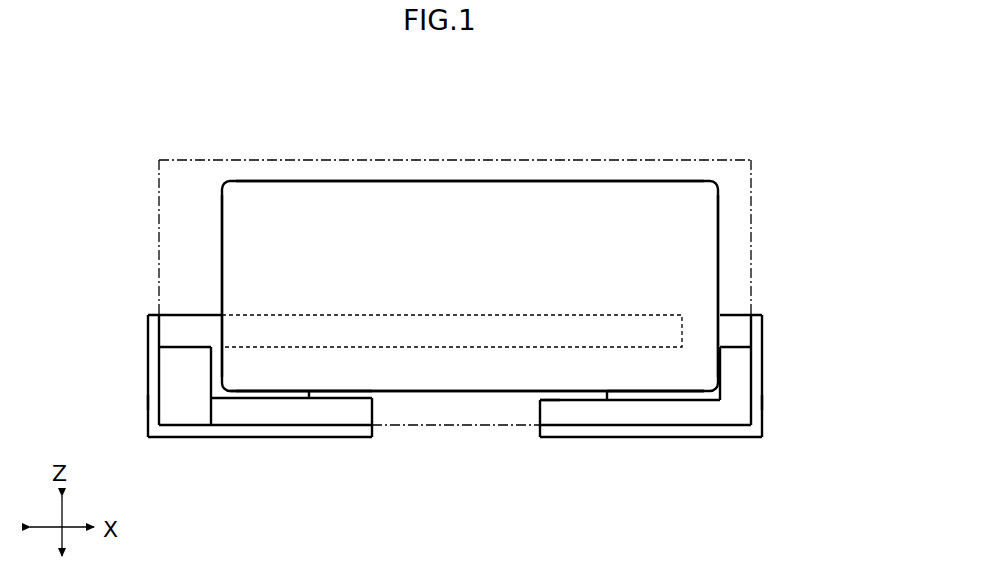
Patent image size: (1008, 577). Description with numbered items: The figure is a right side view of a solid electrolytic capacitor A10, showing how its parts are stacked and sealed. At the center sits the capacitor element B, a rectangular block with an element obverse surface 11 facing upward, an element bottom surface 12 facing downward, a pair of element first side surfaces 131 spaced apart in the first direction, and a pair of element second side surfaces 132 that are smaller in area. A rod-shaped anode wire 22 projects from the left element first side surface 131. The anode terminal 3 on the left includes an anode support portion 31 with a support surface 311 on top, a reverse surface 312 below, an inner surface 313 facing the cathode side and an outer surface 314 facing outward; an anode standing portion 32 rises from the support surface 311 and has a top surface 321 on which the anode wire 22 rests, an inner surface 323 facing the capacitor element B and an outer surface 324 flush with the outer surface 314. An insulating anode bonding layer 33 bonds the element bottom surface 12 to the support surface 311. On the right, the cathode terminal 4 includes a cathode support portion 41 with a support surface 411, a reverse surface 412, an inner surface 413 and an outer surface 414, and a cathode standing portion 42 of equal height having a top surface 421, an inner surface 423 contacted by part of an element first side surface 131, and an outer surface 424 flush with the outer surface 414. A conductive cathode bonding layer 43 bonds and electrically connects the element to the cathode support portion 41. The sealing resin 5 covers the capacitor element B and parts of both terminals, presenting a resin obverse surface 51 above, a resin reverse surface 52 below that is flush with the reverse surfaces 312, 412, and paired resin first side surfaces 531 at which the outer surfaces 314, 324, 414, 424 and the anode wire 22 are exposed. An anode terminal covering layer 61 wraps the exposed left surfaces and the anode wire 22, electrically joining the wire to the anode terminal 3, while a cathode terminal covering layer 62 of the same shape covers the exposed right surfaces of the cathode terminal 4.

The solid electrolytic capacitor A10 is at (160, 136).
The capacitor element B is at (350, 178).
The element obverse surface 11 is at (538, 181).
The element bottom surface 12 is at (488, 392).
The element first side surface 131 is at (222, 225).
The element second side surface 132 is at (434, 248).
The anode wire 22 is at (205, 330).
The anode bonding layer 33 is at (275, 392).
The cathode bonding layer 43 is at (693, 391).
The anode terminal 3 is at (200, 411).
The anode support portion 31 is at (352, 485).
The support surface 311 is at (337, 400).
The reverse surface 312 is at (229, 427).
The inner surface 313 is at (372, 413).
The outer surface 314 is at (153, 413).
The anode standing portion 32 is at (80, 318).
The top surface 321 is at (187, 345).
The inner surface 323 is at (211, 370).
The outer surface 324 is at (148, 385).
The cathode terminal 4 is at (697, 422).
The cathode support portion 41 is at (745, 485).
The support surface 411 is at (580, 400).
The reverse surface 412 is at (667, 427).
The inner surface 413 is at (540, 410).
The outer surface 414 is at (762, 413).
The cathode standing portion 42 is at (818, 318).
The top surface 421 is at (735, 342).
The inner surface 423 is at (716, 370).
The outer surface 424 is at (762, 385).
The sealing resin 5 is at (459, 294).
The resin obverse surface 51 is at (708, 155).
The resin reverse surface 52 is at (430, 425).
The resin first side surface 531 is at (158, 203).
The anode terminal covering layer 61 is at (150, 402).
The cathode terminal covering layer 62 is at (763, 403).